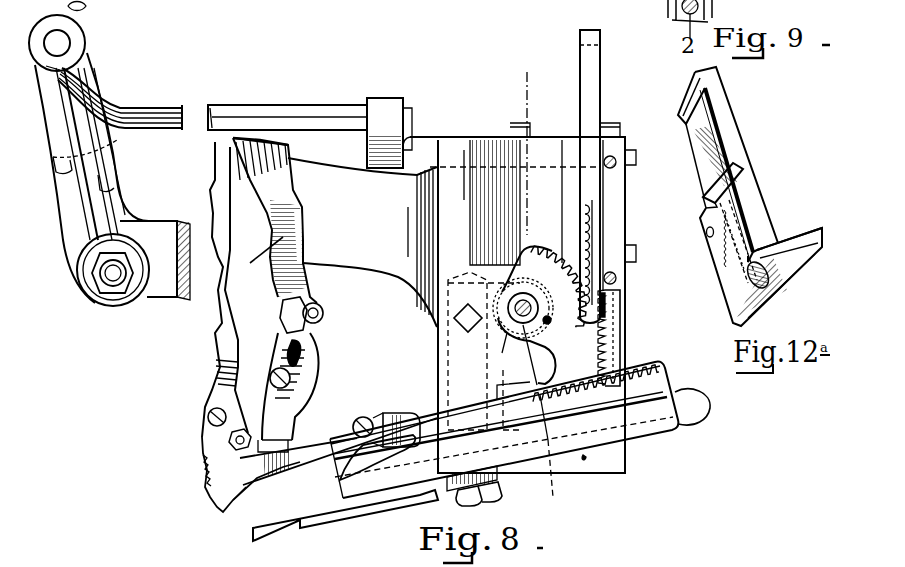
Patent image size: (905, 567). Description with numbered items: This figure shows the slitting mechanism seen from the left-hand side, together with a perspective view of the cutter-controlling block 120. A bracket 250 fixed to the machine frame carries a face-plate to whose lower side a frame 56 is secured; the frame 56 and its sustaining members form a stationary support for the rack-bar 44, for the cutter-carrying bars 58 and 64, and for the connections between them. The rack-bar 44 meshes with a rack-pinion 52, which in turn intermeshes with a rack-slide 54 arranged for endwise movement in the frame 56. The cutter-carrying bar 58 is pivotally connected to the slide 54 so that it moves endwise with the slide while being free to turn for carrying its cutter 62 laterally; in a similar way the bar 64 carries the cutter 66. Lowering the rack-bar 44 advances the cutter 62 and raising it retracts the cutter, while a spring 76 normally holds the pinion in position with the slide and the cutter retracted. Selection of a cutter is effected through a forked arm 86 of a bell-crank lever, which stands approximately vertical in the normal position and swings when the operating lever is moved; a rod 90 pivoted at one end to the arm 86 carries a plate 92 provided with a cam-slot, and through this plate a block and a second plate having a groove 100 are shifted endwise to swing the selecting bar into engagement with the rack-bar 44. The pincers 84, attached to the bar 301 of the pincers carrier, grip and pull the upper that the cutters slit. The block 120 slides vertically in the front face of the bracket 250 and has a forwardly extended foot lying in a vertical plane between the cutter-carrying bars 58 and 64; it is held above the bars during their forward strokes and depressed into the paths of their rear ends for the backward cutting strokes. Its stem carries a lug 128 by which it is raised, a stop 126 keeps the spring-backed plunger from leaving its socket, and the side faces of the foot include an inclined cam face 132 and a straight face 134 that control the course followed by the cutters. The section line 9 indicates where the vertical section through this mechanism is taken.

In FIG. 8, the section line 9 is at (549, 456).
In FIG. 8, the rack-bar 44 is at (601, 82).
In FIG. 8, the rack-pinion 52 is at (583, 334).
In FIG. 8, the rack-slide 54 is at (637, 358).
In FIG. 8, the frame 56 is at (299, 210).
In FIG. 8, the cutter-carrying bar 58 is at (420, 408).
In FIG. 8, the cutter 62 is at (340, 480).
In FIG. 8, the cutter-carrying bar 64 is at (314, 442).
In FIG. 8, the cutter 66 is at (223, 512).
In FIG. 8, the spring 76 is at (510, 330).
In FIG. 8, the pincers 84 is at (205, 490).
In FIG. 8, the forked arm 86 is at (120, 174).
In FIG. 8, the rod 90 is at (177, 105).
In FIG. 8, the plate 92 is at (432, 135).
In FIG. 8, the groove 100 is at (156, 5).
In FIG. 12A, the block 120 is at (757, 196).
In FIG. 12A, the stop 126 is at (704, 202).
In FIG. 12A, the lug 128 is at (678, 112).
In FIG. 12A, the cam face 132 is at (742, 281).
In FIG. 12A, the straight face 134 is at (799, 236).
In FIG. 8, the bracket 250 is at (373, 253).
In FIG. 8, the bar 301 is at (305, 230).